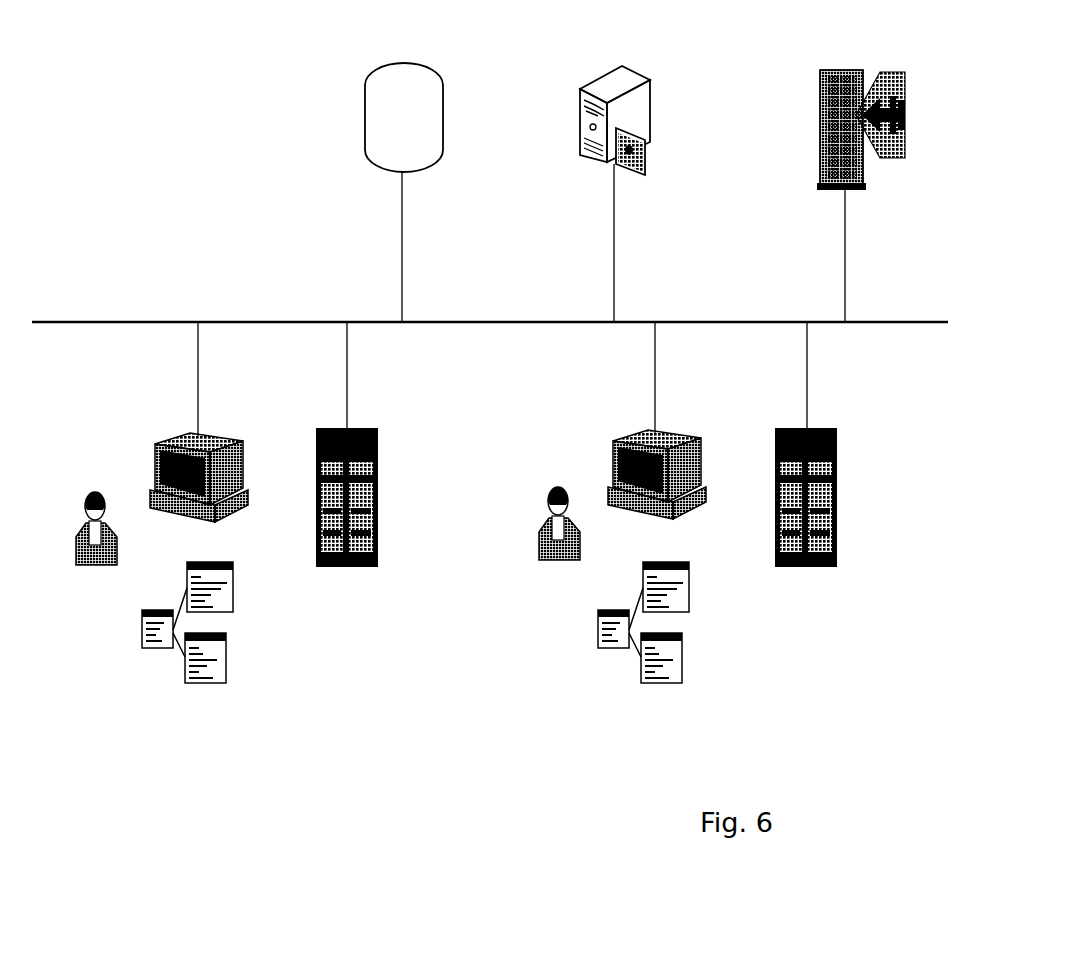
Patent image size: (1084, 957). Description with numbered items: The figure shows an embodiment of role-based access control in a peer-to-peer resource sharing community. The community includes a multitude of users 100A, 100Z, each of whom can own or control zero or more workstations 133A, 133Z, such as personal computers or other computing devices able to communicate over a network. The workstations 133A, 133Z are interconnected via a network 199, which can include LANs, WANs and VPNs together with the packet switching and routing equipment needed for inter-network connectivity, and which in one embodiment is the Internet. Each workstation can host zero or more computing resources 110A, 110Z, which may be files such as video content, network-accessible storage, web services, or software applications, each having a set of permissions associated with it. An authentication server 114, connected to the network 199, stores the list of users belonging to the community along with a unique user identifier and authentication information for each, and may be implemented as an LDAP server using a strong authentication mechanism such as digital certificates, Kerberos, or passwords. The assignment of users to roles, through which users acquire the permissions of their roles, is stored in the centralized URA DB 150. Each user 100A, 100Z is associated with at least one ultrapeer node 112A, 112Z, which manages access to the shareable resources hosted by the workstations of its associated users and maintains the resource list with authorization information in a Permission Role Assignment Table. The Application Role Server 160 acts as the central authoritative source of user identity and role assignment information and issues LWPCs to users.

The network 199 is at (490, 301).
The URA DB 150 is at (404, 192).
The Application Role Server 160 is at (572, 164).
The authentication server 114 is at (821, 164).
The workstation 133A is at (196, 434).
The workstation 133Z is at (654, 432).
The ultrapeer node 112A is at (346, 465).
The ultrapeer node 112Z is at (805, 466).
The user 100A is at (97, 549).
The user 100Z is at (565, 538).
The computing resources 110A is at (214, 646).
The computing resources 110Z is at (670, 646).